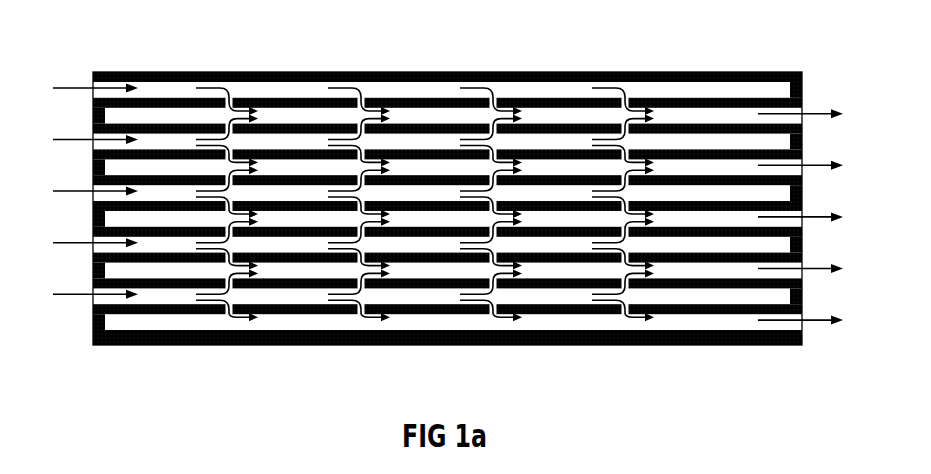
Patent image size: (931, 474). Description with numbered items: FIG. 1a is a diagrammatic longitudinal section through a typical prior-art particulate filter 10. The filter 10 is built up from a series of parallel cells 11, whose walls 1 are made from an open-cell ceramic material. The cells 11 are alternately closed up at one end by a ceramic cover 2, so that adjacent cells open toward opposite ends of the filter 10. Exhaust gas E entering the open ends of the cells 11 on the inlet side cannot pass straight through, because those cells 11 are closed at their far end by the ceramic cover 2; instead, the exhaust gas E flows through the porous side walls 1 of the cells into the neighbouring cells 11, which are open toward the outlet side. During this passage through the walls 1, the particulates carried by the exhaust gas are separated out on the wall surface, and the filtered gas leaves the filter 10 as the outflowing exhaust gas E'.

The walls 1 is at (775, 72).
The ceramic cover 2 is at (803, 85).
The particulate filter 10 is at (178, 60).
The cells 11 is at (543, 90).
The exhaust gas E is at (79, 191).
The exhaust gas outlet E' is at (815, 216).